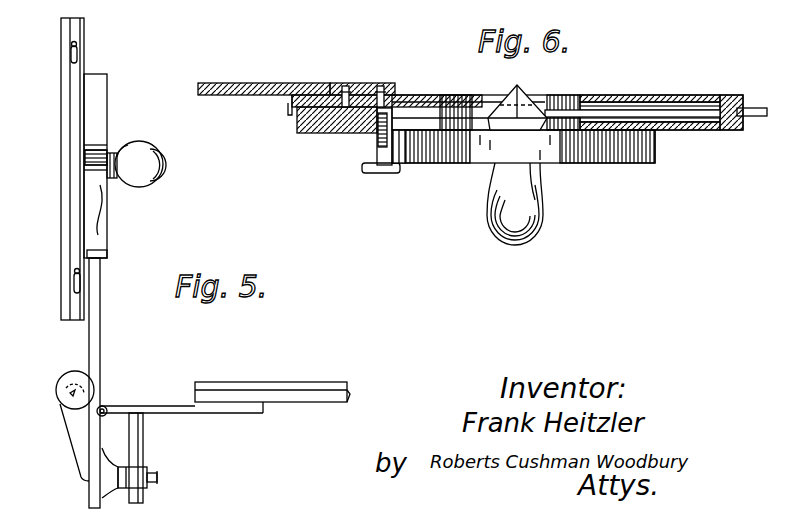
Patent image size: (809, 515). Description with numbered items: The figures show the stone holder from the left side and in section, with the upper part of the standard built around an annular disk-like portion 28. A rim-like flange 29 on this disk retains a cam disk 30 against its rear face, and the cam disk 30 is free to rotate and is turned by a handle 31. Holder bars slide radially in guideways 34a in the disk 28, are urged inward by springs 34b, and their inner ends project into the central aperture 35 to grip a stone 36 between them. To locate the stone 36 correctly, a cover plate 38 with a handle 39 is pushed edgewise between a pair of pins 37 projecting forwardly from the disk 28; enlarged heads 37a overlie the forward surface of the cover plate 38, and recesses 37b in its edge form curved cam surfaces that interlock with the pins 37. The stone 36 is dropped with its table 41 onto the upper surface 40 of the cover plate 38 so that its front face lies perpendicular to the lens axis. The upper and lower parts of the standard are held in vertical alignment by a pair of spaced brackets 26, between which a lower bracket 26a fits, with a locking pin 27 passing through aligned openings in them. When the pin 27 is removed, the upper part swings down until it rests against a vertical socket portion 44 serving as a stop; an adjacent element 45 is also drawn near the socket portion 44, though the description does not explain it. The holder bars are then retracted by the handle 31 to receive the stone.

In FIG. 5, the spaced ears or brackets 26 is at (56, 384).
In FIG. 5, the lower ear or bracket 26a is at (70, 445).
In FIG. 5, the locking pin 27 is at (58, 406).
In FIG. 6, the disk-like portion 28 is at (330, 124).
In FIG. 6, the rim-like flange 29 is at (300, 100).
In FIG. 6, the cam disk 30 is at (423, 95).
In FIG. 6, the handle 31 is at (250, 74).
In FIG. 6, the guideways 34a is at (718, 120).
In FIG. 6, the springs 34b is at (688, 125).
In FIG. 6, the central opening or aperture 35 is at (455, 103).
In FIG. 5, the stone 36 is at (61, 165).
In FIG. 6, the stone 36 is at (530, 95).
In FIG. 5, the pins 37 is at (108, 235).
In FIG. 6, the pins 37 is at (380, 150).
In FIG. 5, the enlarged heads 37a is at (116, 178).
In FIG. 6, the enlarged heads 37a is at (373, 173).
In FIG. 5, the recesses 37b is at (100, 152).
In FIG. 6, the recesses 37b is at (408, 165).
In FIG. 5, the cover plate 38 is at (100, 115).
In FIG. 6, the cover plate 38 is at (455, 160).
In FIG. 5, the handle 39 is at (150, 147).
In FIG. 6, the handle 39 is at (532, 236).
In FIG. 6, the upper surface 40 is at (478, 135).
In FIG. 6, the table 41 is at (507, 145).
In FIG. 5, the vertical socket portion 44 is at (140, 440).
In FIG. 5, the bar 45 is at (168, 364).